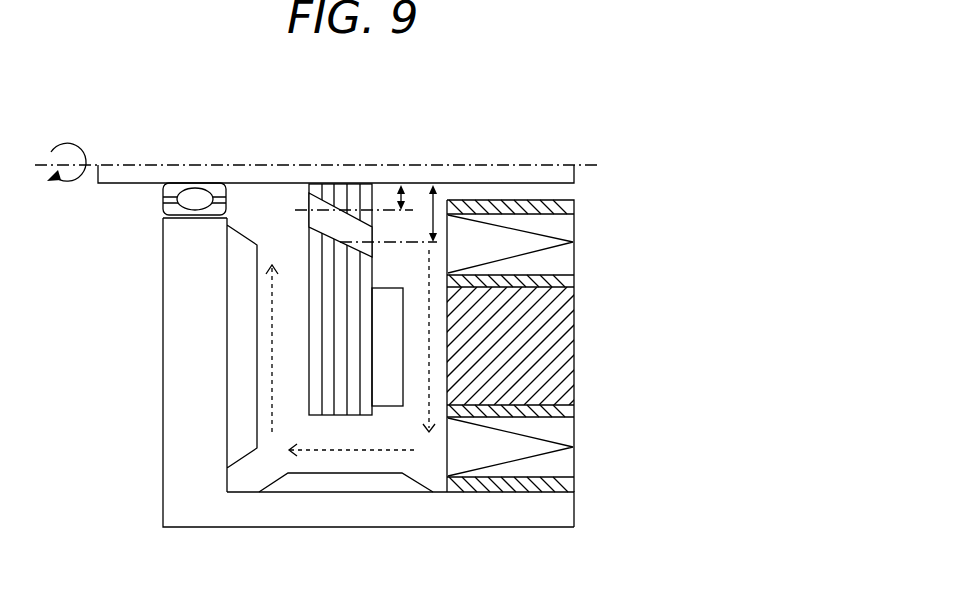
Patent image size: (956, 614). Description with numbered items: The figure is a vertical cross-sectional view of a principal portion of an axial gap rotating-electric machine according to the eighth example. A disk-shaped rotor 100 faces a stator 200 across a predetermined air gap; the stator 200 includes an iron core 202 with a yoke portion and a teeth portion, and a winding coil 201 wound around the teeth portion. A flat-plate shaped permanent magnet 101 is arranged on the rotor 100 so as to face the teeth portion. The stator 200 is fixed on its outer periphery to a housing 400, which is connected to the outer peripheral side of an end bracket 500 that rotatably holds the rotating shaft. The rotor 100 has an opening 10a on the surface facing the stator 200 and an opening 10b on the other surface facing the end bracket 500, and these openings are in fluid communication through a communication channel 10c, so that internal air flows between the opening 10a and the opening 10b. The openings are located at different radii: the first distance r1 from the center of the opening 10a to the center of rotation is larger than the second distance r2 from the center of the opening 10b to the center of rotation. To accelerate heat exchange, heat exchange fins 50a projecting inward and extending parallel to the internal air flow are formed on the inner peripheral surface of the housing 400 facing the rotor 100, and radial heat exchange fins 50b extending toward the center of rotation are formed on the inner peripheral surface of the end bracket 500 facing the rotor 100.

The opening 10a is at (308, 247).
The opening 10b is at (306, 192).
The communication channel 10c is at (345, 227).
The heat exchange fins 50a is at (352, 485).
The radial heat exchange fins 50b is at (235, 349).
The rotor 100 is at (254, 338).
The permanent magnet 101 is at (388, 398).
The stator 200 is at (508, 346).
The winding coil 201 is at (560, 263).
The iron core 202 is at (560, 331).
The housing 400 is at (549, 525).
The end bracket 500 is at (160, 460).
The first distance r1 is at (433, 165).
The second distance r2 is at (402, 165).